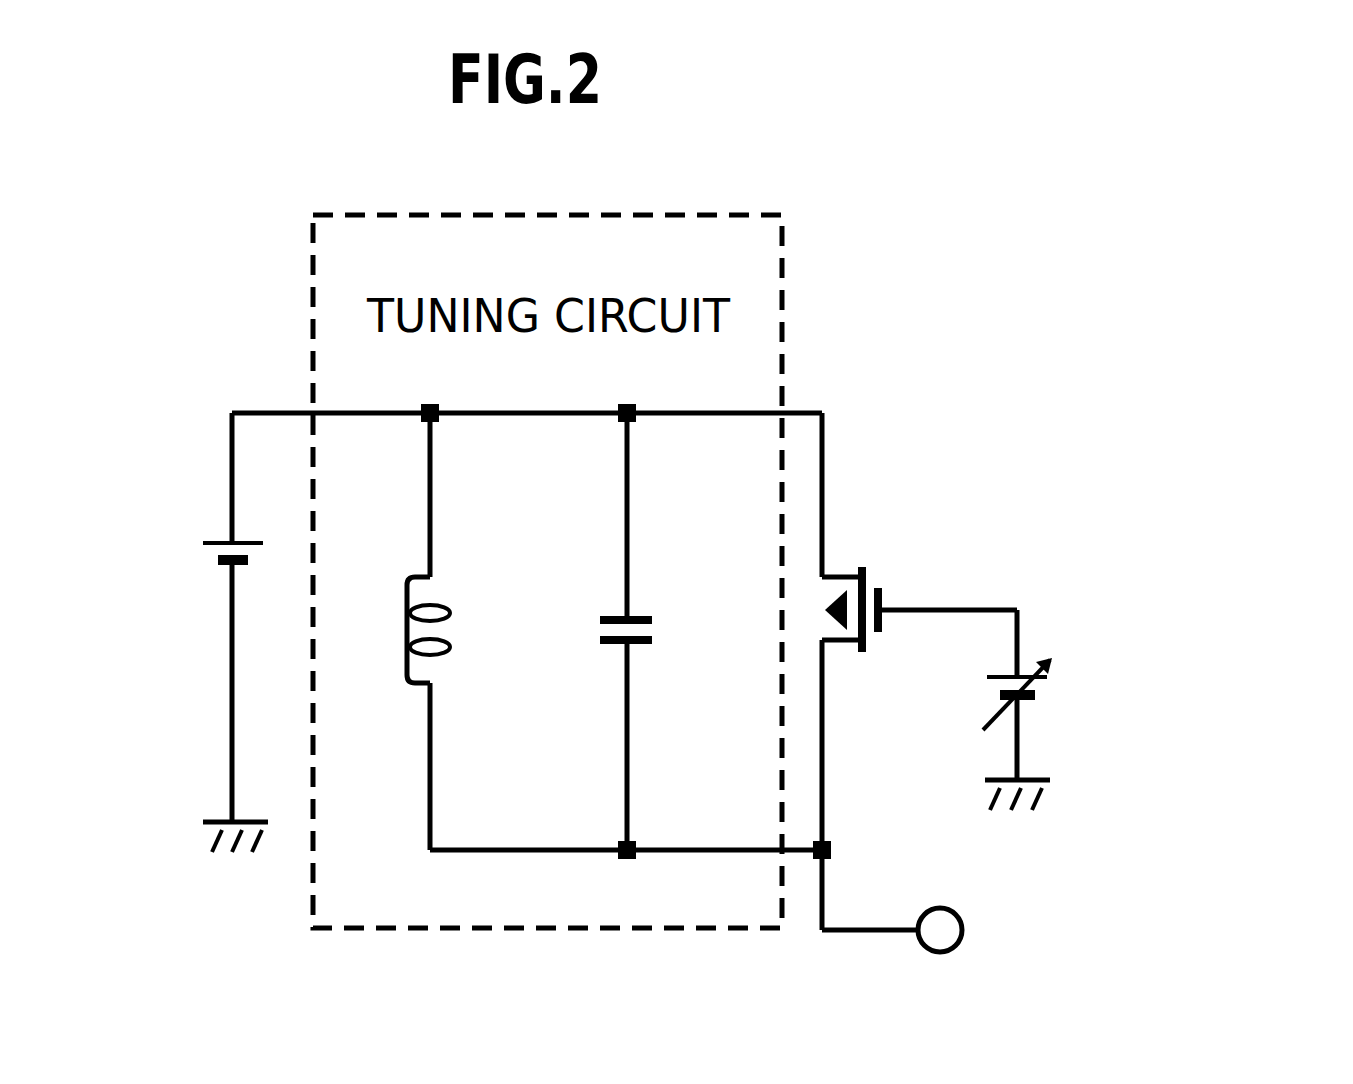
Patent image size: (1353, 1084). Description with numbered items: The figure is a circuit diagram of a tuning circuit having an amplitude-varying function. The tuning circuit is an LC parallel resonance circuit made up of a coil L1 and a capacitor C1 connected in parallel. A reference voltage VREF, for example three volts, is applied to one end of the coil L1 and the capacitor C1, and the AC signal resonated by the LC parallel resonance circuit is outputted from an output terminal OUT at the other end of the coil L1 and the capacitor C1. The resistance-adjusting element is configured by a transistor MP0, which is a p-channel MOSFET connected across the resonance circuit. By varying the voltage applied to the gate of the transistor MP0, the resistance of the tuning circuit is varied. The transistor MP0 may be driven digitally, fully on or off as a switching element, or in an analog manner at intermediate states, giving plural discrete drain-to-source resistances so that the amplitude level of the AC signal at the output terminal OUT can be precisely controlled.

The coil L1 is at (467, 631).
The capacitor C1 is at (661, 631).
The transistor MP0 is at (1067, 631).
The reference voltage VREF is at (171, 632).
The output terminal OUT is at (944, 904).